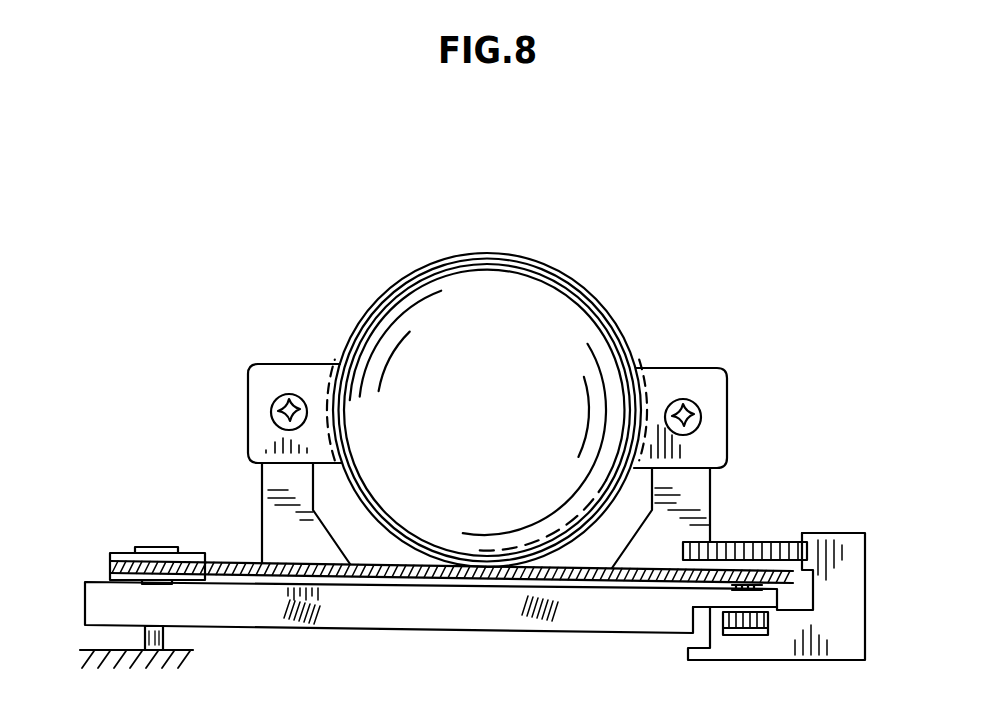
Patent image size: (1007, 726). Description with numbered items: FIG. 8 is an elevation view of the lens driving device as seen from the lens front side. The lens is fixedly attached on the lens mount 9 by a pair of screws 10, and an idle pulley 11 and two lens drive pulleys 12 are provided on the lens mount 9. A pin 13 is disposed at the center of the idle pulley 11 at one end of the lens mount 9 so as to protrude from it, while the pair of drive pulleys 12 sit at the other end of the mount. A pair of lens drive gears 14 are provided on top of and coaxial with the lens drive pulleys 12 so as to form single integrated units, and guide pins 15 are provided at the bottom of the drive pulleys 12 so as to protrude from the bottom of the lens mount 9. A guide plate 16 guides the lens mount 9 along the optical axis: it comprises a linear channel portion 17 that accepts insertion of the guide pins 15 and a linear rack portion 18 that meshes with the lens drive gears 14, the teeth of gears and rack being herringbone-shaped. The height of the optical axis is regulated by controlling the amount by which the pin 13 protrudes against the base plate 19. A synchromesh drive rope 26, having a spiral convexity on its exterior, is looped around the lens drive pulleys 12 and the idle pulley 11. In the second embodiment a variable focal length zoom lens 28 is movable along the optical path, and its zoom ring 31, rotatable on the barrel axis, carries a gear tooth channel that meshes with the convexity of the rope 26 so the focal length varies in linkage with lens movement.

The lens mount 9 is at (84, 601).
The screws 10 is at (702, 413).
The idle pulley 11 is at (188, 548).
The lens drive pulleys 12 is at (790, 610).
The pin 13 is at (165, 640).
The lens drive gears 14 is at (742, 541).
The guide pins 15 is at (748, 636).
The guide plate 16 is at (870, 569).
The linear channel portion 17 is at (722, 636).
The linear rack portion 18 is at (822, 532).
The base plate 19 is at (137, 680).
The synchromesh drive rope 26 is at (240, 561).
The variable focal length zoom lens 28 is at (531, 264).
The zoom ring 31 is at (592, 286).